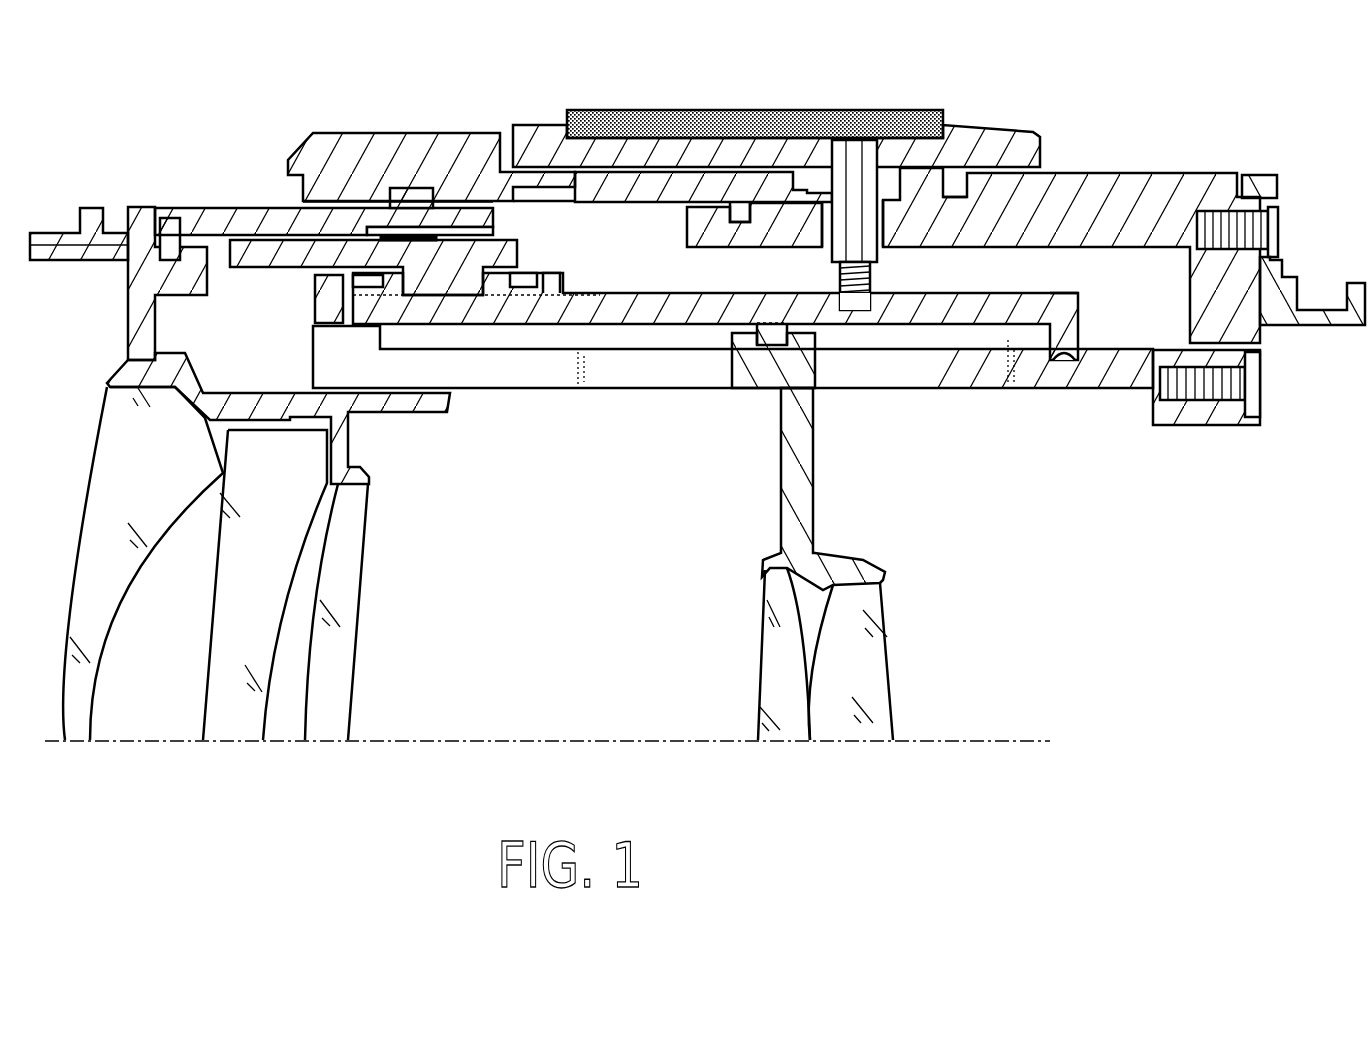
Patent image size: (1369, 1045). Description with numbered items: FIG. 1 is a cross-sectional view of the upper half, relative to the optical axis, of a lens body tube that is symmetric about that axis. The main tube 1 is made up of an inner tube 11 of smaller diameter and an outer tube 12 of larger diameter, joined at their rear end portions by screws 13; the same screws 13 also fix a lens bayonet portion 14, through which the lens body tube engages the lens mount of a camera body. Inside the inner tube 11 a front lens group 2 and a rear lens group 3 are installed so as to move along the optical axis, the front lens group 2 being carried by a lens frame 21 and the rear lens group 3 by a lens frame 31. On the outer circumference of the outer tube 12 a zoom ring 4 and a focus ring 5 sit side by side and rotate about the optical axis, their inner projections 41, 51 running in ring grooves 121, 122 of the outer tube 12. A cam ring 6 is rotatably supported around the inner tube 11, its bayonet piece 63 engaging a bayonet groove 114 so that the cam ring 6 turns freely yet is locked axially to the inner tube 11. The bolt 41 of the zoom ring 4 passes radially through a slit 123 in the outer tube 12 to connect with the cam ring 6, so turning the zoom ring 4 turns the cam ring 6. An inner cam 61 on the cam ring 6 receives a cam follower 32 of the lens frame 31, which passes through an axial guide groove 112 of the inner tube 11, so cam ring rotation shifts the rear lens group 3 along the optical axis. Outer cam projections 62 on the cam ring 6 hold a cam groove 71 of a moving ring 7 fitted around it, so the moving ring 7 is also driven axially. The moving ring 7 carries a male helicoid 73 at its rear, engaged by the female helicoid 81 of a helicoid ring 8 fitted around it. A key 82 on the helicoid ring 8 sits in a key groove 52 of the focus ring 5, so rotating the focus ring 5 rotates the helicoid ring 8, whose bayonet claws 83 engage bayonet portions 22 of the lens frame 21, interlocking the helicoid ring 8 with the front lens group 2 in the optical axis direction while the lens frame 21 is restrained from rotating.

The main tube 1 is at (1108, 148).
The front lens group 2 is at (268, 778).
The rear lens group 3 is at (831, 782).
The zoom ring 4 is at (866, 125).
The focus ring 5 is at (343, 132).
The cam ring 6 is at (941, 310).
The moving ring 7 is at (500, 247).
The helicoid ring 8 is at (210, 218).
The inner tube 11 is at (1107, 377).
The outer tube 12 is at (1172, 185).
The screws 13 is at (1265, 240).
The lens bayonet portion 14 is at (1328, 327).
The lens frame 21 is at (140, 318).
The bayonet portions 22 is at (210, 297).
The lens frame 31 is at (793, 513).
The cam follower 32 is at (742, 363).
The bolt 41 is at (952, 188).
The projection 51 is at (740, 215).
The key groove 52 is at (320, 192).
The inner cam 61 is at (800, 350).
The outer cam projections 62 is at (405, 283).
The bayonet piece 63 is at (1080, 338).
The cam groove 71 is at (467, 290).
The male helicoid 73 is at (468, 225).
The female helicoid 81 is at (312, 262).
The key 82 is at (410, 185).
The bayonet claws 83 is at (170, 238).
The guide groove 112 is at (590, 370).
The bayonet groove 114 is at (1055, 362).
The ring groove 121 is at (967, 195).
The ring groove 122 is at (735, 222).
The slit 123 is at (903, 222).